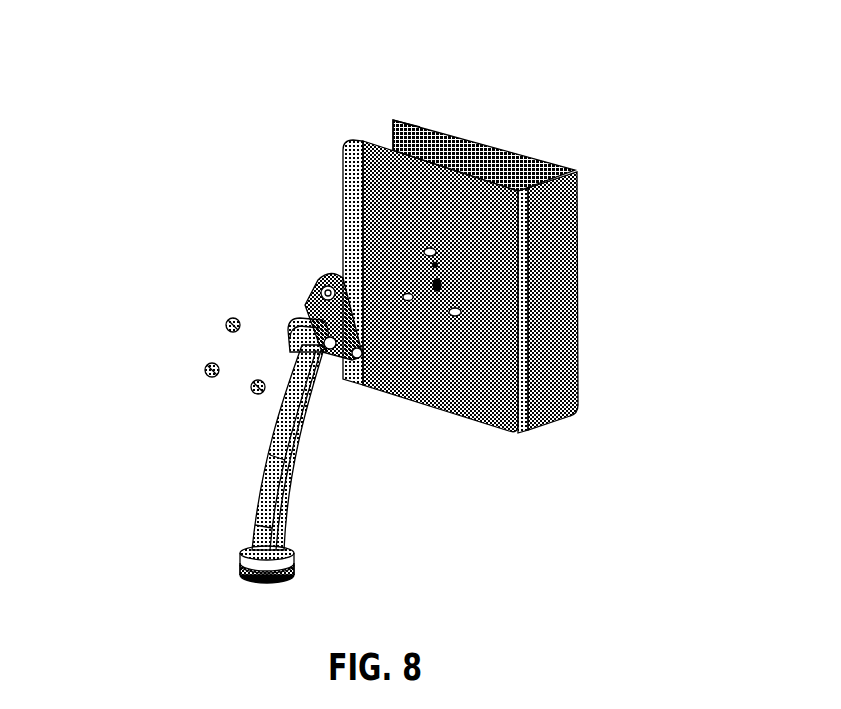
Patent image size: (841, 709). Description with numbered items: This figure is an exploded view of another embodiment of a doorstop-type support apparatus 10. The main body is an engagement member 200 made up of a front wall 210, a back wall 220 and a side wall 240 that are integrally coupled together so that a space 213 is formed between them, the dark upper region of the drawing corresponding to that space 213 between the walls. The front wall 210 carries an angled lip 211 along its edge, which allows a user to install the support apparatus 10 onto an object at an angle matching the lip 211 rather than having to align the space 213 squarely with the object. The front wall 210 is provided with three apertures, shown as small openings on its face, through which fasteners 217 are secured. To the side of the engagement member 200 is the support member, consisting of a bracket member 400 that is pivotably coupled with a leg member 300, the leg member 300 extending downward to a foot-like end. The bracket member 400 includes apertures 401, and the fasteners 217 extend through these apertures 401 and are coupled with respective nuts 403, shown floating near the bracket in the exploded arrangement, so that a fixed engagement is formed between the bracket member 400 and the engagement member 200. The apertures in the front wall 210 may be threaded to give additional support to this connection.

The support apparatus 10 is at (605, 162).
The engagement member 200 is at (560, 423).
The front wall 210 is at (472, 390).
The angled lip 211 is at (350, 237).
The space 213 is at (457, 153).
The fasteners 217 is at (425, 245).
The back wall 220 is at (393, 125).
The side wall 240 is at (553, 287).
The leg member 300 is at (252, 500).
The bracket member 400 is at (352, 352).
The apertures 401 is at (322, 290).
The nuts 403 is at (220, 320).